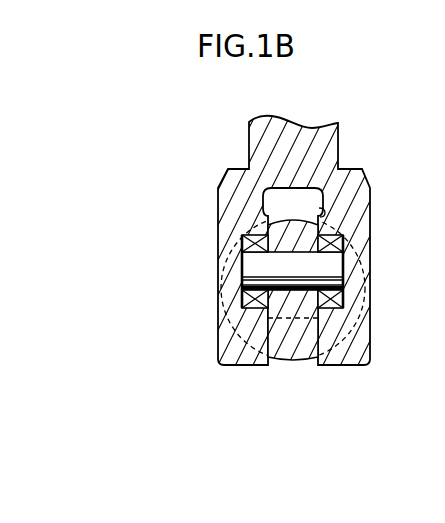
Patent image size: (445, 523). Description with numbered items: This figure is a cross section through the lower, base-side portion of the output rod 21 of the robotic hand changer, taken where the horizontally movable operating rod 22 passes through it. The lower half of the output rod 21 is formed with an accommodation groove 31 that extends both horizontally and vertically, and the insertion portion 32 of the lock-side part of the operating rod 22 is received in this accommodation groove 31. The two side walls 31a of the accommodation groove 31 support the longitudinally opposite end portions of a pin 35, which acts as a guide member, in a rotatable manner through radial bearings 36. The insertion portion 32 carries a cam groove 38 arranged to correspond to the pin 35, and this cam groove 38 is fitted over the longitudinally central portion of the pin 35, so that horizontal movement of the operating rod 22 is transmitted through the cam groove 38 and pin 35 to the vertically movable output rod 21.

The output rod 21 is at (339, 134).
The operating rod 22 is at (292, 361).
The accommodation groove 31 is at (322, 210).
The side wall 31a is at (240, 366).
The insertion portion 32 is at (300, 357).
The pin 35 is at (337, 271).
The radial bearing 36 is at (340, 300).
The cam groove 38 is at (303, 292).